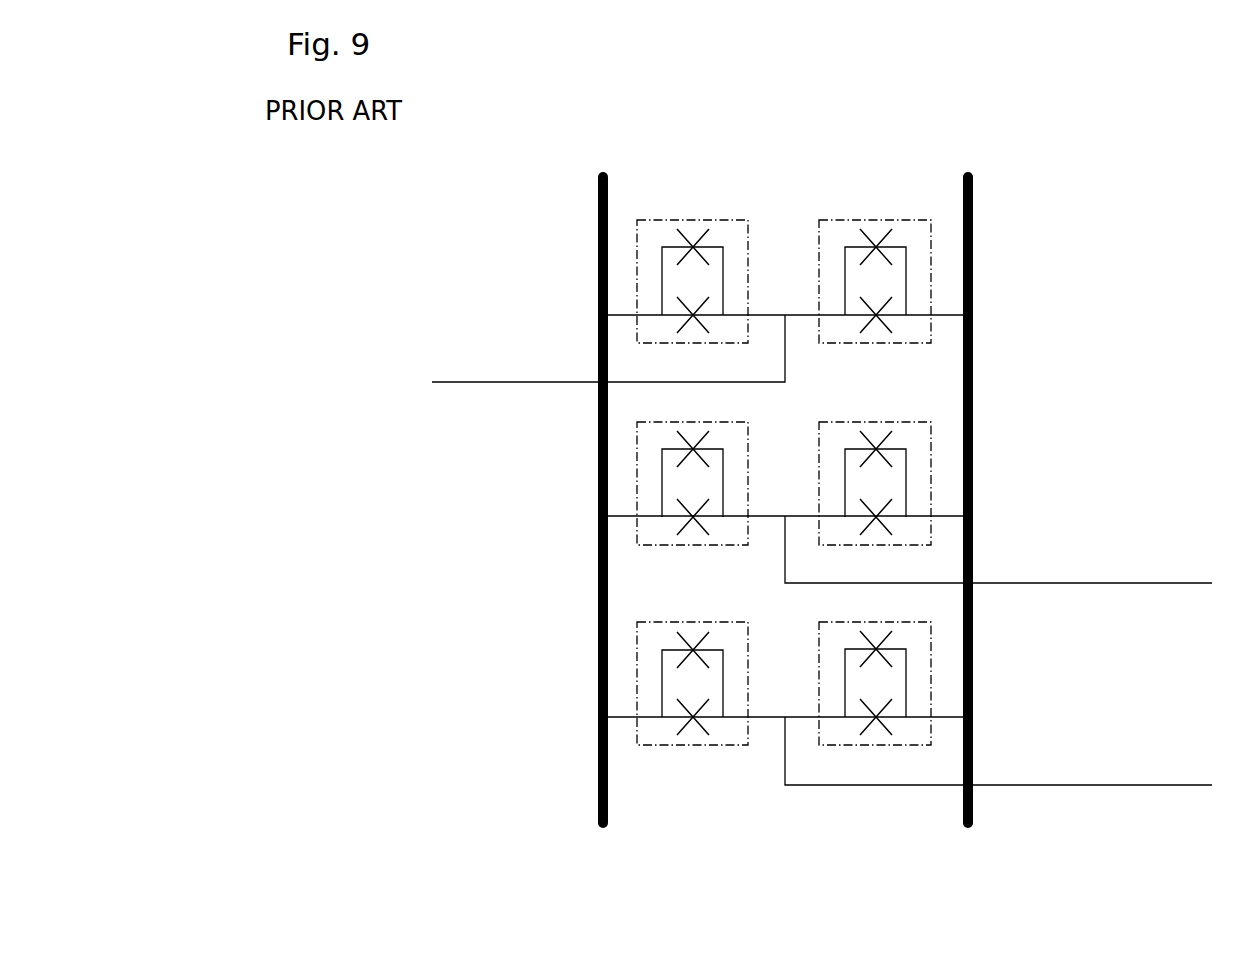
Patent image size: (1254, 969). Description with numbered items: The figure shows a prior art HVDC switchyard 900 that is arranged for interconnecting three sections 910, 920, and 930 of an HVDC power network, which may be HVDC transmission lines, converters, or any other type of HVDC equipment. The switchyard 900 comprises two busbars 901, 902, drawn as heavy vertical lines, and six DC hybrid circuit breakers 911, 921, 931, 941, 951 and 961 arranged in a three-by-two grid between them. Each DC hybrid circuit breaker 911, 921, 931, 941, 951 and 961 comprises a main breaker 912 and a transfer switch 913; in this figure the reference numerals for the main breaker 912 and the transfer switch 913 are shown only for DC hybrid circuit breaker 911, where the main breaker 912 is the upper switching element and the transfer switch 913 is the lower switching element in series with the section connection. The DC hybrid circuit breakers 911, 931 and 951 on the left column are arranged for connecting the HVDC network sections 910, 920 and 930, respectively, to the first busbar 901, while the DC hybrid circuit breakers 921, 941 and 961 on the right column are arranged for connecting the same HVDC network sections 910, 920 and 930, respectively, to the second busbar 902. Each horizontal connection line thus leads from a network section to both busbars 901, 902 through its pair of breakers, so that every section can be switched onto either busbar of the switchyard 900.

The HVDC switchyard 900 is at (418, 903).
The busbar 901 is at (601, 476).
The busbar 902 is at (963, 476).
The HVDC network section 910 is at (700, 348).
The HVDC network section 920 is at (907, 549).
The HVDC network section 930 is at (907, 751).
The DC hybrid circuit breaker 911 is at (627, 677).
The main breaker 912 is at (676, 643).
The transfer switch 913 is at (678, 723).
The DC hybrid circuit breaker 921 is at (876, 701).
The DC hybrid circuit breaker 931 is at (692, 503).
The DC hybrid circuit breaker 941 is at (875, 500).
The DC hybrid circuit breaker 951 is at (692, 301).
The DC hybrid circuit breaker 961 is at (876, 300).